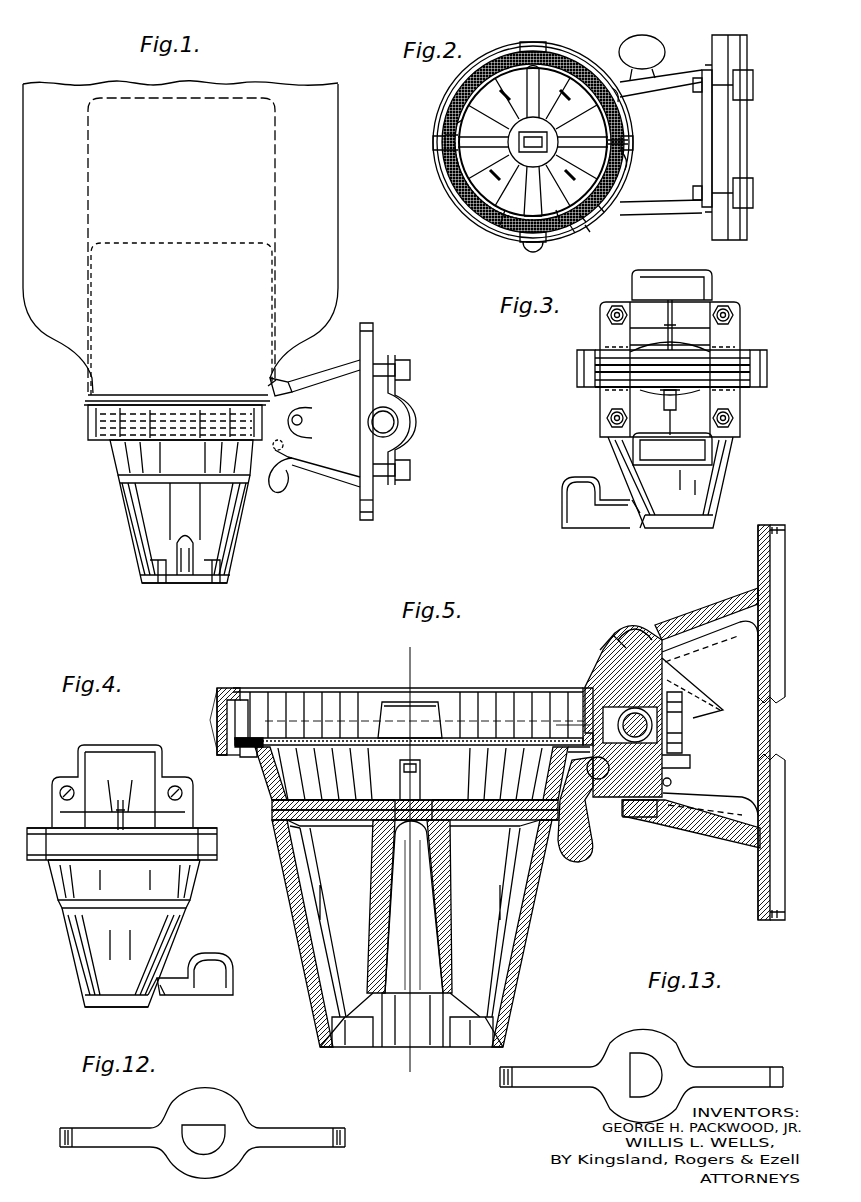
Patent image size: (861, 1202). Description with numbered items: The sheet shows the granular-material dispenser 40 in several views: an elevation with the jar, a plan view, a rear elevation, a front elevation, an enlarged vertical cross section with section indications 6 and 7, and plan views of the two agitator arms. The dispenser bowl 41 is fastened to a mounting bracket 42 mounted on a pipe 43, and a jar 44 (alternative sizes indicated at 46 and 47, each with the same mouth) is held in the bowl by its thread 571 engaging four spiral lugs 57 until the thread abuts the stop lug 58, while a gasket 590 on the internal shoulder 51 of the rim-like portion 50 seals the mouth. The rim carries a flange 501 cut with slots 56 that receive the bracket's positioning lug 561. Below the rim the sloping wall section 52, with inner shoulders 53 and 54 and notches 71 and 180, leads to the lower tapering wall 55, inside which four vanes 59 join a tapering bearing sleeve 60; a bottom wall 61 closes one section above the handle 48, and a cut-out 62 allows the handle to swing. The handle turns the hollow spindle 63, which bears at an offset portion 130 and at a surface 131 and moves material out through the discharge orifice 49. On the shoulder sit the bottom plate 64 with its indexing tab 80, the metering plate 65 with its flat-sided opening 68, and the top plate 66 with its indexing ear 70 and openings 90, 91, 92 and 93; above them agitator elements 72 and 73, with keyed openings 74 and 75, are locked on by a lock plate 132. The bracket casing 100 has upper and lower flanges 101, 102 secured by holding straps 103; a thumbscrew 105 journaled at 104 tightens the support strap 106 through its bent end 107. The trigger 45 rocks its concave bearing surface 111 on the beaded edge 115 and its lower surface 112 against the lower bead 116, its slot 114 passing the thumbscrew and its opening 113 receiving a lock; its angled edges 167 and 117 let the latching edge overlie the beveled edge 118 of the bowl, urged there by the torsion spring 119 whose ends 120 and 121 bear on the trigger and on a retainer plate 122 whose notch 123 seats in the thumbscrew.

In FIG. 1, the dispenser 40 is at (90, 462).
In FIG. 2, the dispenser 40 is at (487, 238).
In FIG. 3, the dispenser 40 is at (590, 460).
In FIG. 1, the dispenser bowl 41 is at (242, 535).
In FIG. 2, the dispenser bowl 41 is at (440, 182).
In FIG. 3, the dispenser bowl 41 is at (725, 490).
In FIG. 4, the dispenser bowl 41 is at (68, 970).
In FIG. 5, the dispenser bowl 41 is at (532, 936).
In FIG. 1, the mounting bracket 42 is at (375, 338).
In FIG. 2, the mounting bracket 42 is at (660, 215).
In FIG. 3, the mounting bracket 42 is at (740, 286).
In FIG. 4, the mounting bracket 42 is at (75, 745).
In FIG. 5, the mounting bracket 42 is at (722, 855).
In FIG. 1, the pipe 43 is at (408, 440).
In FIG. 2, the pipe 43 is at (747, 138).
In FIG. 3, the pipe 43 is at (768, 360).
In FIG. 1, the jar 44 is at (342, 249).
In FIG. 1, the trigger 45 is at (283, 493).
In FIG. 2, the trigger 45 is at (640, 138).
In FIG. 3, the trigger 45 is at (668, 335).
In FIG. 4, the trigger 45 is at (121, 832).
In FIG. 5, the trigger 45 is at (575, 862).
In FIG. 1, the jar 46 is at (190, 243).
In FIG. 1, the jar 47 is at (237, 98).
In FIG. 1, the dispenser handle 48 is at (178, 545).
In FIG. 2, the dispenser handle 48 is at (540, 250).
In FIG. 3, the dispenser handle 48 is at (565, 515).
In FIG. 4, the dispenser handle 48 is at (230, 992).
In FIG. 1, the discharge orifice 49 is at (150, 585).
In FIG. 5, the discharge orifice 49 is at (333, 1050).
In FIG. 1, the upper rim-like portion 50 is at (153, 406).
In FIG. 2, the upper rim-like portion 50 is at (577, 230).
In FIG. 3, the upper rim-like portion 50 is at (750, 352).
In FIG. 4, the upper rim-like portion 50 is at (225, 832).
In FIG. 5, the upper rim-like portion 50 is at (218, 834).
In FIG. 5, the internal shoulder 51 is at (248, 760).
In FIG. 1, the sloping intermediate wall section 52 is at (110, 452).
In FIG. 2, the sloping intermediate wall section 52 is at (458, 206).
In FIG. 3, the sloping intermediate wall section 52 is at (758, 395).
In FIG. 4, the sloping intermediate wall section 52 is at (195, 890).
In FIG. 5, the sloping intermediate wall section 52 is at (262, 800).
In FIG. 2, the inner shoulder 53 is at (466, 78).
In FIG. 5, the inner shoulder 53 is at (275, 815).
In FIG. 5, the inner shoulder 54 is at (284, 832).
In FIG. 1, the lower tapering wall portion 55 is at (150, 517).
In FIG. 3, the lower tapering wall portion 55 is at (682, 500).
In FIG. 4, the lower tapering wall portion 55 is at (160, 946).
In FIG. 5, the lower tapering wall portion 55 is at (520, 956).
In FIG. 5, the slots 56 is at (552, 744).
In FIG. 2, the inwardly projecting lug 57 is at (435, 143).
In FIG. 5, the inwardly projecting lug 57 is at (580, 702).
In FIG. 2, the positioning lug 58 is at (462, 88).
In FIG. 5, the positioning lug 58 is at (255, 720).
In FIG. 5, the vanes 59 is at (485, 905).
In FIG. 5, the bearing sleeve 60 is at (450, 885).
In FIG. 1, the bottom horizontal wall 61 is at (150, 565).
In FIG. 3, the bottom horizontal wall 61 is at (630, 502).
In FIG. 4, the bottom horizontal wall 61 is at (168, 985).
In FIG. 1, the cut out 62 is at (225, 565).
In FIG. 3, the cut out 62 is at (640, 512).
In FIG. 4, the cut out 62 is at (162, 998).
In FIG. 2, the hollow tapering spindle 63 is at (536, 130).
In FIG. 5, the hollow tapering spindle 63 is at (447, 915).
In FIG. 5, the bottom plate 64 is at (352, 828).
In FIG. 2, the intermediate metering plate 65 is at (510, 225).
In FIG. 5, the intermediate metering plate 65 is at (340, 800).
In FIG. 2, the top plate 66 is at (632, 162).
In FIG. 5, the top plate 66 is at (365, 800).
In FIG. 5, the central opening 68 is at (442, 805).
In FIG. 2, the indexing ear 70 is at (537, 70).
In FIG. 2, the notch 71 is at (512, 50).
In FIG. 2, the agitator element 72 is at (455, 158).
In FIG. 5, the agitator element 72 is at (526, 800).
In FIG. 12, the agitator element 72 is at (275, 1135).
In FIG. 2, the agitator element 73 is at (560, 92).
In FIG. 5, the agitator element 73 is at (422, 773).
In FIG. 13, the agitator element 73 is at (713, 1070).
In FIG. 12, the characterized opening 74 is at (222, 1140).
In FIG. 13, the characterized opening 75 is at (655, 1068).
In FIG. 2, the indexing tab 80 is at (525, 240).
In FIG. 2, the opening 90 is at (585, 220).
In FIG. 2, the opening 91 is at (616, 96).
In FIG. 2, the opening 92 is at (462, 104).
In FIG. 2, the opening 93 is at (470, 216).
In FIG. 1, the casing 100 is at (322, 372).
In FIG. 2, the casing 100 is at (665, 208).
In FIG. 3, the casing 100 is at (612, 333).
In FIG. 4, the casing 100 is at (134, 765).
In FIG. 5, the casing 100 is at (696, 604).
In FIG. 1, the upper flange 101 is at (366, 323).
In FIG. 2, the upper flange 101 is at (700, 138).
In FIG. 3, the upper flange 101 is at (702, 280).
In FIG. 4, the upper flange 101 is at (116, 745).
In FIG. 5, the upper flange 101 is at (758, 565).
In FIG. 1, the lower flange 102 is at (362, 505).
In FIG. 3, the lower flange 102 is at (712, 452).
In FIG. 4, the lower flange 102 is at (190, 907).
In FIG. 5, the lower flange 102 is at (758, 905).
In FIG. 1, the holding straps 103 is at (400, 418).
In FIG. 2, the holding straps 103 is at (747, 205).
In FIG. 3, the holding straps 103 is at (752, 400).
In FIG. 1, the journal 104 is at (306, 428).
In FIG. 1, the thumbscrew 105 is at (303, 418).
In FIG. 2, the thumbscrew 105 is at (658, 46).
In FIG. 5, the thumbscrew 105 is at (684, 738).
In FIG. 1, the support strap 106 is at (88, 428).
In FIG. 2, the support strap 106 is at (447, 196).
In FIG. 3, the support strap 106 is at (767, 372).
In FIG. 4, the support strap 106 is at (200, 872).
In FIG. 5, the support strap 106 is at (217, 700).
In FIG. 5, the strap end 107 is at (684, 760).
In FIG. 5, the concave upper bearing surface 111 is at (604, 646).
In FIG. 1, the lower bearing surface 112 is at (287, 474).
In FIG. 5, the lower bearing surface 112 is at (660, 822).
In FIG. 1, the opening 113 is at (285, 445).
In FIG. 5, the opening 113 is at (598, 780).
In FIG. 5, the arcuate slot 114 is at (583, 728).
In FIG. 1, the beaded edge 115 is at (270, 378).
In FIG. 3, the beaded edge 115 is at (720, 345).
In FIG. 5, the beaded edge 115 is at (628, 628).
In FIG. 3, the lower beaded surface 116 is at (718, 396).
In FIG. 5, the lower beaded surface 116 is at (628, 818).
In FIG. 5, the latching edge 117 is at (606, 665).
In FIG. 2, the beveled edge 118 is at (535, 252).
In FIG. 5, the beveled edge 118 is at (583, 695).
In FIG. 3, the spring 119 is at (684, 396).
In FIG. 5, the spring 119 is at (680, 732).
In FIG. 3, the spring end 120 is at (664, 400).
In FIG. 5, the spring end 120 is at (672, 782).
In FIG. 5, the spring end 121 is at (736, 700).
In FIG. 5, the retainer plate 122 is at (702, 680).
In FIG. 5, the notch 123 is at (665, 694).
In FIG. 5, the offset portion 130 is at (452, 986).
In FIG. 5, the surface 131 is at (432, 838).
In FIG. 2, the lock plate 132 is at (517, 136).
In FIG. 5, the lock plate 132 is at (426, 795).
In FIG. 1, the angled edge 167 is at (262, 385).
In FIG. 5, the angled edge 167 is at (616, 640).
In FIG. 1, the notch 180 is at (178, 425).
In FIG. 2, the notch 180 is at (560, 226).
In FIG. 1, the flange 501 is at (88, 405).
In FIG. 2, the flange 501 is at (630, 218).
In FIG. 3, the flange 501 is at (578, 353).
In FIG. 4, the flange 501 is at (52, 826).
In FIG. 5, the flange 501 is at (225, 688).
In FIG. 5, the positioning lug 561 is at (583, 716).
In FIG. 1, the thread 571 is at (125, 432).
In FIG. 2, the gasket 590 is at (592, 232).
In FIG. 5, the gasket 590 is at (238, 752).
In FIG. 5, the section line 6 is at (788, 730).
In FIG. 5, the section line 7 is at (392, 1068).